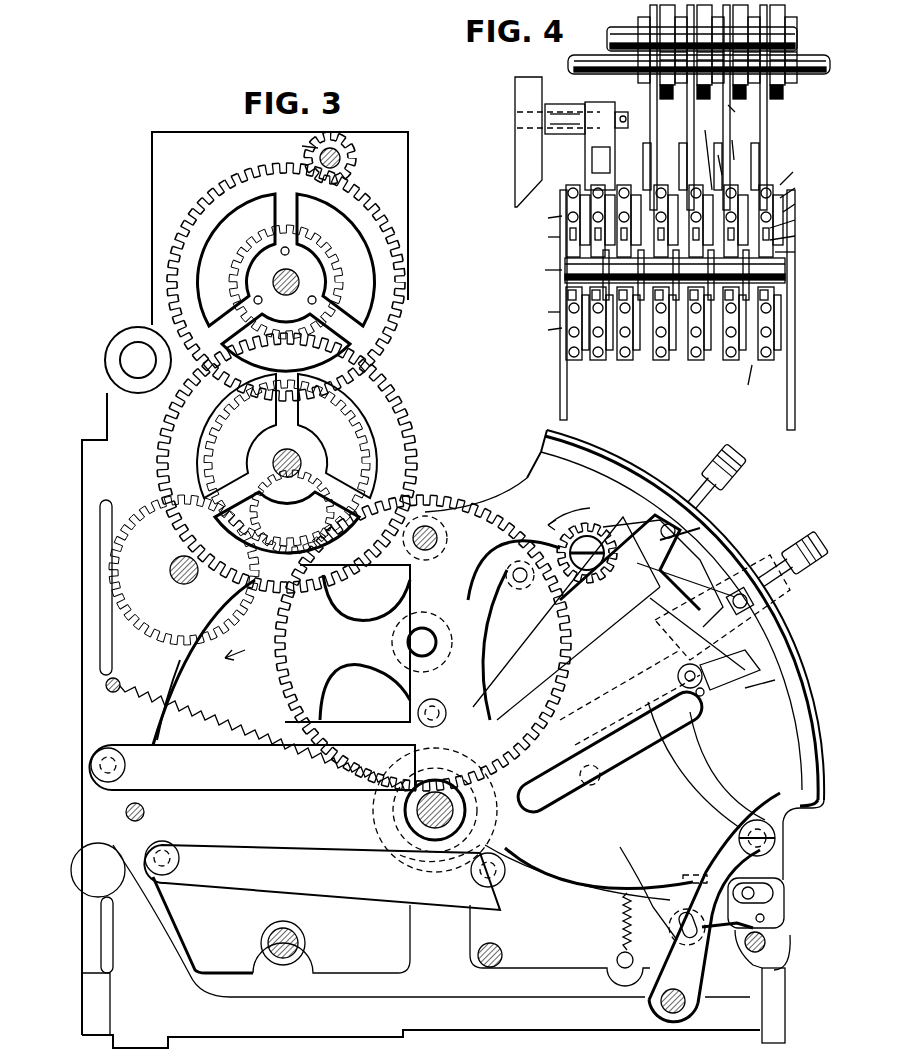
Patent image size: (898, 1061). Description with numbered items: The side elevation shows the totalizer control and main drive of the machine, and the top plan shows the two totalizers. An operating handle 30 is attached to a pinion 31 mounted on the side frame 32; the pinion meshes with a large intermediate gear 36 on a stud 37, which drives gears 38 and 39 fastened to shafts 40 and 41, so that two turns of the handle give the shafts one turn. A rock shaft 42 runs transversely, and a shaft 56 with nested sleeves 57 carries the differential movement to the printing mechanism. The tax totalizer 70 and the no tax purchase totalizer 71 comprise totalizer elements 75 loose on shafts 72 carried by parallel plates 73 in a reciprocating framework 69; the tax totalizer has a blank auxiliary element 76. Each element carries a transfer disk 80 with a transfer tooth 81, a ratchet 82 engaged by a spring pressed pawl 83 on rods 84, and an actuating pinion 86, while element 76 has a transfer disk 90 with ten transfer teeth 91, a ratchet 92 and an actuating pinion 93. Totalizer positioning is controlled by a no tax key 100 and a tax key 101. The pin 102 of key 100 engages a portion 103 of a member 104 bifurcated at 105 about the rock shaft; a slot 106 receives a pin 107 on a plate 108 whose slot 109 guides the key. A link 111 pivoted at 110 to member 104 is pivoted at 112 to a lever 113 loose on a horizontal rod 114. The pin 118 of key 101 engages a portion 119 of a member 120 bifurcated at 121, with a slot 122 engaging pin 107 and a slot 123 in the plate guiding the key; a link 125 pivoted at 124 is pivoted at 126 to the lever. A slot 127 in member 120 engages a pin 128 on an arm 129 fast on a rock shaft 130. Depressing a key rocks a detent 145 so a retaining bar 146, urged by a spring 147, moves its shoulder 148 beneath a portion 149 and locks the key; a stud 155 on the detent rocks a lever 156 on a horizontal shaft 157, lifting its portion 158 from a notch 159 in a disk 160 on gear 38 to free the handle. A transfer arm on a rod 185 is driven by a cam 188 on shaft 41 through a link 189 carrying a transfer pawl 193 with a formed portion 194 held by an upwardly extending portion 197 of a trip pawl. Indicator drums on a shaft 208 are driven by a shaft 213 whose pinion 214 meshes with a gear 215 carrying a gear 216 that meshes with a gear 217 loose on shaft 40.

In FIG. 3, the operating handle 30 is at (600, 786).
In FIG. 3, the pinion 31 is at (592, 526).
In FIG. 3, the side frame 32 is at (527, 478).
In FIG. 3, the intermediate gear 36 is at (283, 700).
In FIG. 3, the stud 37 is at (436, 641).
In FIG. 3, the gear 38 is at (365, 430).
In FIG. 3, the gear 39 is at (258, 622).
In FIG. 3, the shaft 40 is at (294, 456).
In FIG. 3, the driving shaft 41 is at (170, 570).
In FIG. 4, the driving shaft 41 is at (790, 40).
In FIG. 3, the rock shaft 42 is at (456, 812).
In FIG. 3, the shaft 56 is at (300, 937).
In FIG. 3, the nested sleeves 57 is at (300, 949).
In FIG. 4, the reciprocating framework 69 is at (517, 94).
In FIG. 4, the tax totalizer 70 is at (541, 236).
In FIG. 4, the no tax purchase totalizer 71 is at (541, 311).
In FIG. 4, the shafts 72 is at (543, 272).
In FIG. 4, the parallel plates 73 is at (670, 234).
In FIG. 4, the totalizer elements 75 is at (678, 259).
In FIG. 4, the element 76 is at (797, 248).
In FIG. 4, the transfer disk 80 is at (749, 380).
In FIG. 4, the transfer tooth 81 is at (740, 355).
In FIG. 4, the ratchet 82 is at (702, 241).
In FIG. 4, the spring pressed pawl 83 is at (785, 283).
In FIG. 4, the rods 84 is at (785, 264).
In FIG. 4, the actuating pinion 86 is at (690, 263).
In FIG. 4, the transfer disk 90 is at (794, 217).
In FIG. 4, the transfer teeth 91 is at (794, 232).
In FIG. 4, the ratchet 92 is at (799, 186).
In FIG. 4, the actuating pinion 93 is at (798, 171).
In FIG. 3, the no tax key 100 is at (735, 470).
In FIG. 3, the tax key 101 is at (798, 550).
In FIG. 3, the pin 102 is at (683, 524).
In FIG. 3, the portion 103 is at (645, 580).
In FIG. 3, the member 104 is at (552, 650).
In FIG. 3, the bifurcation 105 is at (405, 818).
In FIG. 3, the slot 106 is at (685, 669).
In FIG. 3, the pin 107 is at (708, 699).
In FIG. 3, the plate 108 is at (777, 678).
In FIG. 3, the slot 109 is at (690, 540).
In FIG. 3, the pivot 110 is at (440, 718).
In FIG. 3, the link 111 is at (280, 765).
In FIG. 3, the pivot 112 is at (120, 758).
In FIG. 3, the lever 113 is at (158, 790).
In FIG. 3, the horizontal rod 114 is at (142, 816).
In FIG. 3, the pin 118 is at (753, 600).
In FIG. 3, the portion 119 is at (710, 598).
In FIG. 3, the member 120 is at (630, 724).
In FIG. 3, the bifurcation 121 is at (415, 856).
In FIG. 3, the slot 122 is at (730, 664).
In FIG. 3, the slot 123 is at (700, 618).
In FIG. 3, the pivot 124 is at (472, 874).
In FIG. 3, the link 125 is at (232, 888).
In FIG. 3, the pivot 126 is at (180, 858).
In FIG. 3, the slot 127 is at (702, 920).
In FIG. 3, the pin 128 is at (680, 928).
In FIG. 3, the arm 129 is at (698, 975).
In FIG. 3, the rock shaft 130 is at (680, 990).
In FIG. 3, the detent 145 is at (705, 780).
In FIG. 3, the retaining bar 146 is at (605, 903).
In FIG. 3, the spring 147 is at (259, 734).
In FIG. 3, the shoulder 148 is at (745, 850).
In FIG. 3, the portion 149 is at (705, 890).
In FIG. 3, the stud 155 is at (514, 570).
In FIG. 3, the lever 156 is at (395, 568).
In FIG. 3, the horizontal shaft 157 is at (437, 538).
In FIG. 3, the portion 158 is at (318, 505).
In FIG. 3, the notch 159 is at (293, 513).
In FIG. 3, the disk 160 is at (353, 425).
In FIG. 4, the rod 185 is at (822, 65).
In FIG. 4, the cam 188 is at (740, 30).
In FIG. 4, the link 189 is at (748, 114).
In FIG. 4, the transfer pawl 193 is at (744, 142).
In FIG. 4, the formed portion 194 is at (716, 157).
In FIG. 4, the upwardly extending portion 197 is at (706, 148).
In FIG. 3, the shaft 208 is at (298, 276).
In FIG. 3, the shaft 213 is at (356, 152).
In FIG. 3, the pinion 214 is at (294, 146).
In FIG. 3, the gear 215 is at (358, 200).
In FIG. 3, the gear 216 is at (256, 244).
In FIG. 3, the gear 217 is at (372, 380).